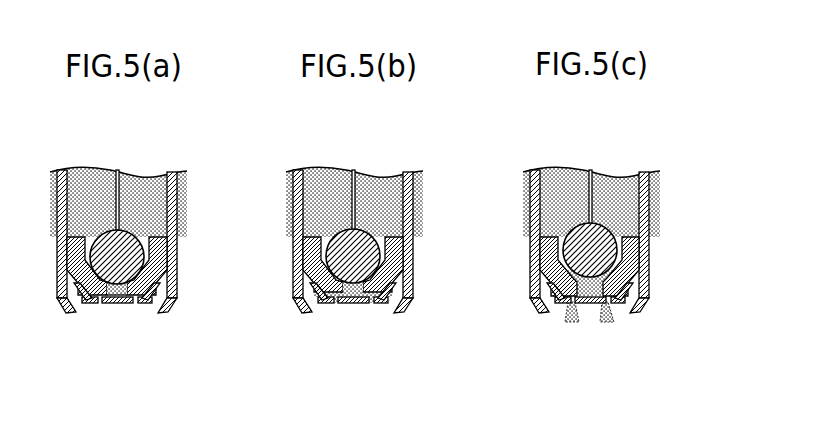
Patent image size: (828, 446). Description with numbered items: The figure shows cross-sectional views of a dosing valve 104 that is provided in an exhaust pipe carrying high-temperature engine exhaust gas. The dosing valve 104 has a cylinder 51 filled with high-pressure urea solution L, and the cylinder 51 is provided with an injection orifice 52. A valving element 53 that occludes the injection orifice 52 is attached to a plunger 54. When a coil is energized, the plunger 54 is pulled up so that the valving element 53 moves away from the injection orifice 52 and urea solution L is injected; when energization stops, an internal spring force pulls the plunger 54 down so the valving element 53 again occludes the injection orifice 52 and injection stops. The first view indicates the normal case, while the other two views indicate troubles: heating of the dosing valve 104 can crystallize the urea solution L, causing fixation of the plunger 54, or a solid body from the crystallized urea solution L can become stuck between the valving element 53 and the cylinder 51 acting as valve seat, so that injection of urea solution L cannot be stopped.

In FIG. 5A, the dosing valve 104 is at (193, 151).
In FIG. 5B, the dosing valve 104 is at (361, 227).
In FIG. 5C, the dosing valve 104 is at (594, 226).
In FIG. 5A, the urea solution L is at (75, 197).
In FIG. 5B, the urea solution L is at (339, 235).
In FIG. 5C, the urea solution L is at (575, 244).
In FIG. 5A, the cylinder 51 is at (58, 222).
In FIG. 5B, the cylinder 51 is at (331, 241).
In FIG. 5C, the cylinder 51 is at (566, 241).
In FIG. 5A, the injection orifice 52 is at (122, 292).
In FIG. 5B, the injection orifice 52 is at (353, 315).
In FIG. 5C, the injection orifice 52 is at (590, 315).
In FIG. 5A, the valving element 53 is at (133, 260).
In FIG. 5B, the valving element 53 is at (377, 260).
In FIG. 5C, the valving element 53 is at (613, 259).
In FIG. 5A, the plunger 54 is at (119, 208).
In FIG. 5B, the plunger 54 is at (402, 200).
In FIG. 5C, the plunger 54 is at (638, 200).